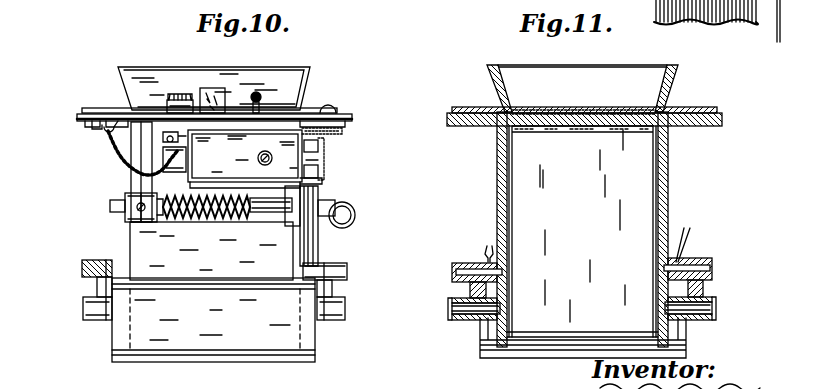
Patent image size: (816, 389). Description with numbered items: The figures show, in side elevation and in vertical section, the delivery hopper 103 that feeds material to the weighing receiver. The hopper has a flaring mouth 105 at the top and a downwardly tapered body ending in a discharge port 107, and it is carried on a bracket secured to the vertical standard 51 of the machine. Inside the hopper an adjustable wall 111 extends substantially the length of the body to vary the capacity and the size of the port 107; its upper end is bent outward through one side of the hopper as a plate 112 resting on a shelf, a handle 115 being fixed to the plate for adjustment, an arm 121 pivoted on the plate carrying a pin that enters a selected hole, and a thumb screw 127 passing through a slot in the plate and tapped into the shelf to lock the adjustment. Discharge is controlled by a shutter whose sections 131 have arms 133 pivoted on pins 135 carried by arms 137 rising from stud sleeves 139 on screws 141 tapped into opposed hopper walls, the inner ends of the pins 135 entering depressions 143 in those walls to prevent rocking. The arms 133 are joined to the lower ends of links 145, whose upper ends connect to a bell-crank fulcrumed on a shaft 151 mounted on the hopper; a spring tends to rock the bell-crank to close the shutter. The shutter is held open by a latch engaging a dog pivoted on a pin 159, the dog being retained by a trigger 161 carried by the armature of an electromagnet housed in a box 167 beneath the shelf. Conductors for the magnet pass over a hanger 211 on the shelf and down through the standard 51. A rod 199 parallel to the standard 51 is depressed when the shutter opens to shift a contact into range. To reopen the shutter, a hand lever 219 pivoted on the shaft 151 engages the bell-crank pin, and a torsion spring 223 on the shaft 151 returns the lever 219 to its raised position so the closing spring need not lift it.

In FIG. 11, the vertical standard 51 is at (656, 12).
In FIG. 10, the delivery hopper 103 is at (132, 239).
In FIG. 11, the delivery hopper 103 is at (497, 197).
In FIG. 10, the flaring mouth 105 is at (168, 67).
In FIG. 11, the flaring mouth 105 is at (545, 72).
In FIG. 11, the discharge port 107 is at (552, 338).
In FIG. 11, the adjustable wall 111 is at (654, 164).
In FIG. 10, the plate 112 is at (156, 114).
In FIG. 10, the handle 115 is at (222, 90).
In FIG. 10, the arm 121 is at (263, 102).
In FIG. 10, the thumb screw 127 is at (160, 113).
In FIG. 10, the shutter sections 131 is at (207, 342).
In FIG. 11, the shutter sections 131 is at (679, 343).
In FIG. 10, the arms 133 is at (113, 265).
In FIG. 11, the arms 133 is at (601, 237).
In FIG. 11, the pins 135 is at (454, 271).
In FIG. 10, the arms 137 is at (96, 294).
In FIG. 11, the arms 137 is at (462, 292).
In FIG. 10, the stud sleeves 139 is at (100, 318).
In FIG. 11, the stud sleeves 139 is at (476, 318).
In FIG. 11, the screws 141 is at (465, 308).
In FIG. 11, the depressions 143 is at (502, 272).
In FIG. 10, the links 145 is at (321, 247).
In FIG. 10, the shaft 151 is at (270, 212).
In FIG. 10, the pin 159 is at (320, 172).
In FIG. 10, the trigger 161 is at (318, 154).
In FIG. 10, the box 167 is at (232, 159).
In FIG. 11, the rod 199 is at (776, 22).
In FIG. 10, the hanger 211 is at (110, 135).
In FIG. 10, the hand lever 219 is at (356, 217).
In FIG. 10, the torsion spring 223 is at (214, 216).